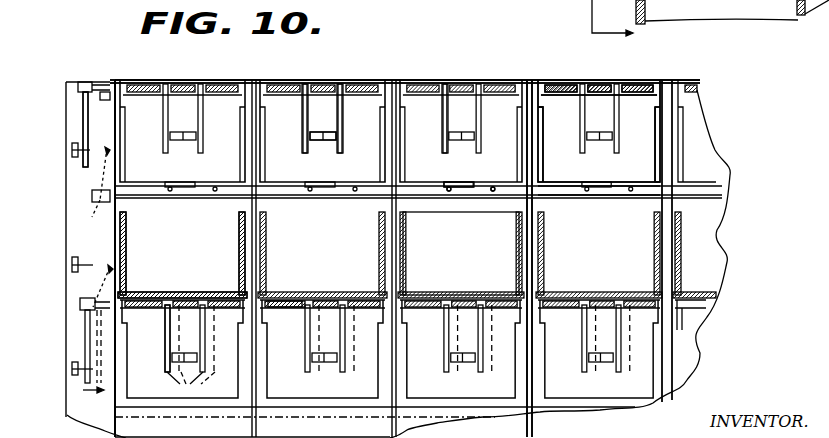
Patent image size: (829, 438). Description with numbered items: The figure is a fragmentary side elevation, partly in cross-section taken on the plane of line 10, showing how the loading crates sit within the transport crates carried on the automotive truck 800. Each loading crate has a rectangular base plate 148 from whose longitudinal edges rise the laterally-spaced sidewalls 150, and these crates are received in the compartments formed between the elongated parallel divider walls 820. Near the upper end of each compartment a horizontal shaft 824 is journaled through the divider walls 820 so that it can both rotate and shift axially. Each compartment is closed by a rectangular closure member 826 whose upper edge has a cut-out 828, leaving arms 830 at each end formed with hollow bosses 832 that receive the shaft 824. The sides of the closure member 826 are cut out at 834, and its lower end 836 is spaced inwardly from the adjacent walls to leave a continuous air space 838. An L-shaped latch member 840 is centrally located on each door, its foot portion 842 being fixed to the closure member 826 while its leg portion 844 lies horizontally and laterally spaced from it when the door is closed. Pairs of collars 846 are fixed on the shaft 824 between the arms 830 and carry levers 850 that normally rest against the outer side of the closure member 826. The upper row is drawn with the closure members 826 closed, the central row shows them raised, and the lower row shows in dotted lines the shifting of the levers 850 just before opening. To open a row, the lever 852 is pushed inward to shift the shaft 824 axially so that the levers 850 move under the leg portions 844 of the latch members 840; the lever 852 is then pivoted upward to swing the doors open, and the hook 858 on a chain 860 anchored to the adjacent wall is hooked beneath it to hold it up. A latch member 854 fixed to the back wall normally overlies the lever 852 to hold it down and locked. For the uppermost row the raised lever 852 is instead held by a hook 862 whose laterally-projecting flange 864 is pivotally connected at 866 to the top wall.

The section line 10 is at (710, 18).
The base plate 148 is at (190, 296).
The sidewalls 150 is at (126, 256).
The automotive truck 800 is at (395, 272).
The divider walls 820 is at (112, 247).
The shaft 824 is at (97, 82).
The closure member 826 is at (360, 197).
The cut-out 828 is at (558, 91).
The arms 830 is at (531, 86).
The hollow bosses 832 is at (541, 83).
The side cut-outs 834 is at (540, 146).
The lower end 836 is at (432, 187).
The air space 838 is at (562, 192).
The latch member 840 is at (327, 128).
The foot portion 842 is at (470, 188).
The leg portion 844 is at (457, 180).
The collars 846 is at (586, 83).
The levers 850 is at (167, 343).
The lever 852 is at (80, 107).
The latch member 854 is at (88, 152).
The hook 858 is at (110, 198).
The chain 860 is at (102, 175).
The hook 862 is at (103, 100).
The flange 864 is at (120, 79).
The pivotal connection 866 is at (133, 80).